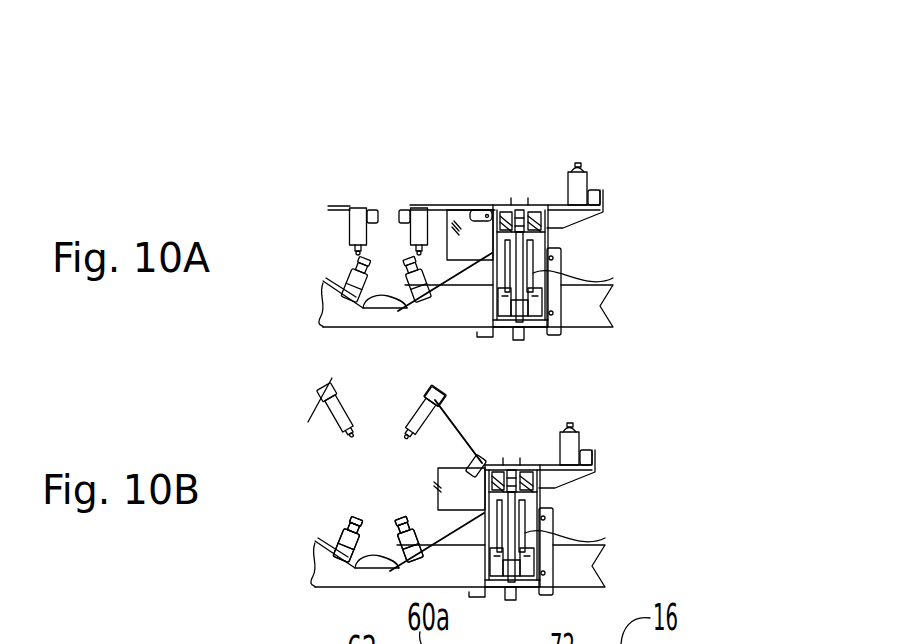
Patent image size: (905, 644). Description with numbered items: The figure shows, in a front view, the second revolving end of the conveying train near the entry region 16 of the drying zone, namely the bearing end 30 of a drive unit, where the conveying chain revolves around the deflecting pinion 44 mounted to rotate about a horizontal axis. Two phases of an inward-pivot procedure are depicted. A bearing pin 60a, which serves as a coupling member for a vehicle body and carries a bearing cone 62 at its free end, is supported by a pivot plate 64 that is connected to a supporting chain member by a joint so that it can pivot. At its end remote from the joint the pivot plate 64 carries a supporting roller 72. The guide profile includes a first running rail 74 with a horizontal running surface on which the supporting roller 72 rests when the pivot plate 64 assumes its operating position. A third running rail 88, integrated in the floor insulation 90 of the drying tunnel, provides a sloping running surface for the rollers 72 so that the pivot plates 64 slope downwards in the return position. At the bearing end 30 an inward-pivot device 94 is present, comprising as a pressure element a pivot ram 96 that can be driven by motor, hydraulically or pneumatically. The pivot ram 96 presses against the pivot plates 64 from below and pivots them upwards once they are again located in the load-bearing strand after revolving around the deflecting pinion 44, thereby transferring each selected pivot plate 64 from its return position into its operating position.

In FIG. 10A, the entry region 16 is at (507, 88).
In FIG. 10B, the entry region 16 is at (612, 408).
In FIG. 10A, the bearing end 30 is at (665, 228).
In FIG. 10B, the bearing end 30 is at (650, 468).
In FIG. 10A, the deflecting pinion 44 is at (550, 262).
In FIG. 10B, the deflecting pinion 44 is at (548, 523).
In FIG. 10A, the bearing pin 60a is at (422, 238).
In FIG. 10B, the bearing pin 60a is at (412, 420).
In FIG. 10A, the bearing cone 62 is at (431, 281).
In FIG. 10B, the bearing cone 62 is at (402, 433).
In FIG. 10A, the pivot plate 64 is at (433, 208).
In FIG. 10B, the pivot plate 64 is at (455, 418).
In FIG. 10A, the supporting roller 72 is at (393, 208).
In FIG. 10B, the supporting roller 72 is at (446, 388).
In FIG. 10B, the first running rail 74 is at (560, 480).
In FIG. 10A, the third running rail 88 is at (380, 318).
In FIG. 10B, the third running rail 88 is at (360, 575).
In FIG. 10A, the floor insulation 90 is at (340, 316).
In FIG. 10B, the floor insulation 90 is at (327, 578).
In FIG. 10A, the inward-pivot device 94 is at (455, 208).
In FIG. 10B, the inward-pivot device 94 is at (438, 485).
In FIG. 10A, the pivot ram 96 is at (478, 208).
In FIG. 10B, the pivot ram 96 is at (467, 463).